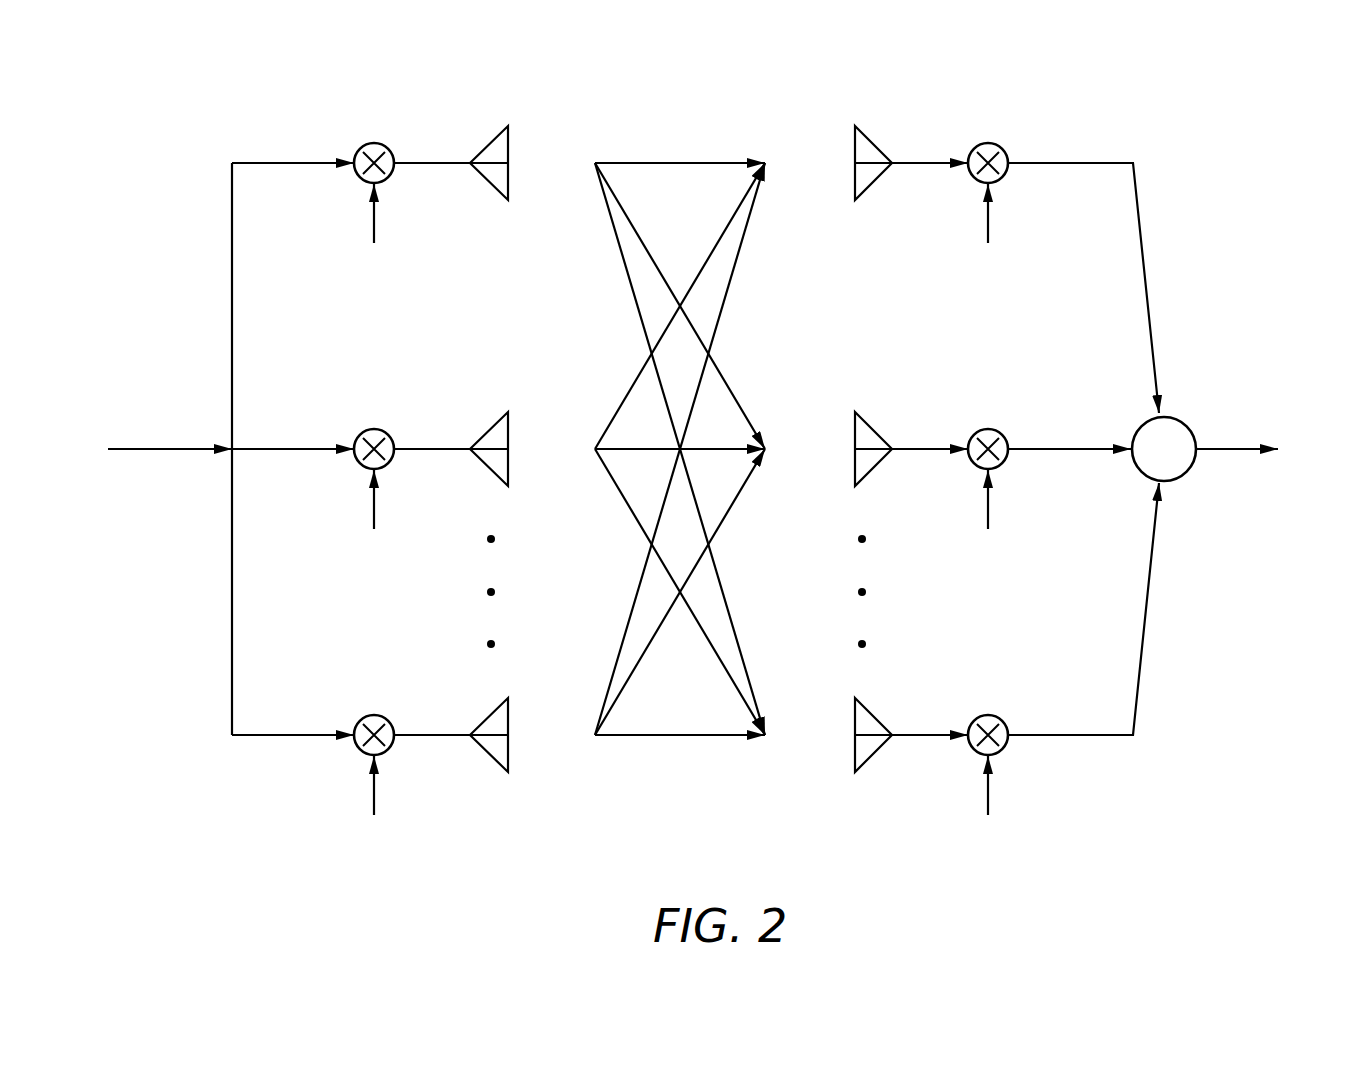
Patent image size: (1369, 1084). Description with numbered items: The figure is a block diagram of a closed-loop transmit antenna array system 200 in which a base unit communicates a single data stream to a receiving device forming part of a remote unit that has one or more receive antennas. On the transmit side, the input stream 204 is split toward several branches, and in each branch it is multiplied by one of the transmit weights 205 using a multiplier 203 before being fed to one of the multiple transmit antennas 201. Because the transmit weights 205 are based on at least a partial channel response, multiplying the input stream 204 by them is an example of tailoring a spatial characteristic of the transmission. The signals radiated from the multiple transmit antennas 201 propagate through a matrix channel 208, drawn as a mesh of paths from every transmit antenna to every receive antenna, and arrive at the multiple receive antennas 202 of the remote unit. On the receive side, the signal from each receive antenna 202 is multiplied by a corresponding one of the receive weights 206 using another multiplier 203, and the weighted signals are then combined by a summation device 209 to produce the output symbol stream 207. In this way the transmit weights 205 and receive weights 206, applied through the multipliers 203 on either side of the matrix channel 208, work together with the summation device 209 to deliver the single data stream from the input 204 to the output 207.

The MIMO communication system 200 is at (1343, 131).
The transmit antennas 201 is at (510, 185).
The receive antennas 202 is at (854, 143).
The multipliers 203 is at (364, 145).
The input stream 204 is at (122, 543).
The transmit weights 205 is at (404, 257).
The receive weights 206 is at (957, 257).
The output symbol stream 207 is at (1262, 545).
The matrix channel 208 is at (682, 161).
The summation device 209 is at (1188, 423).